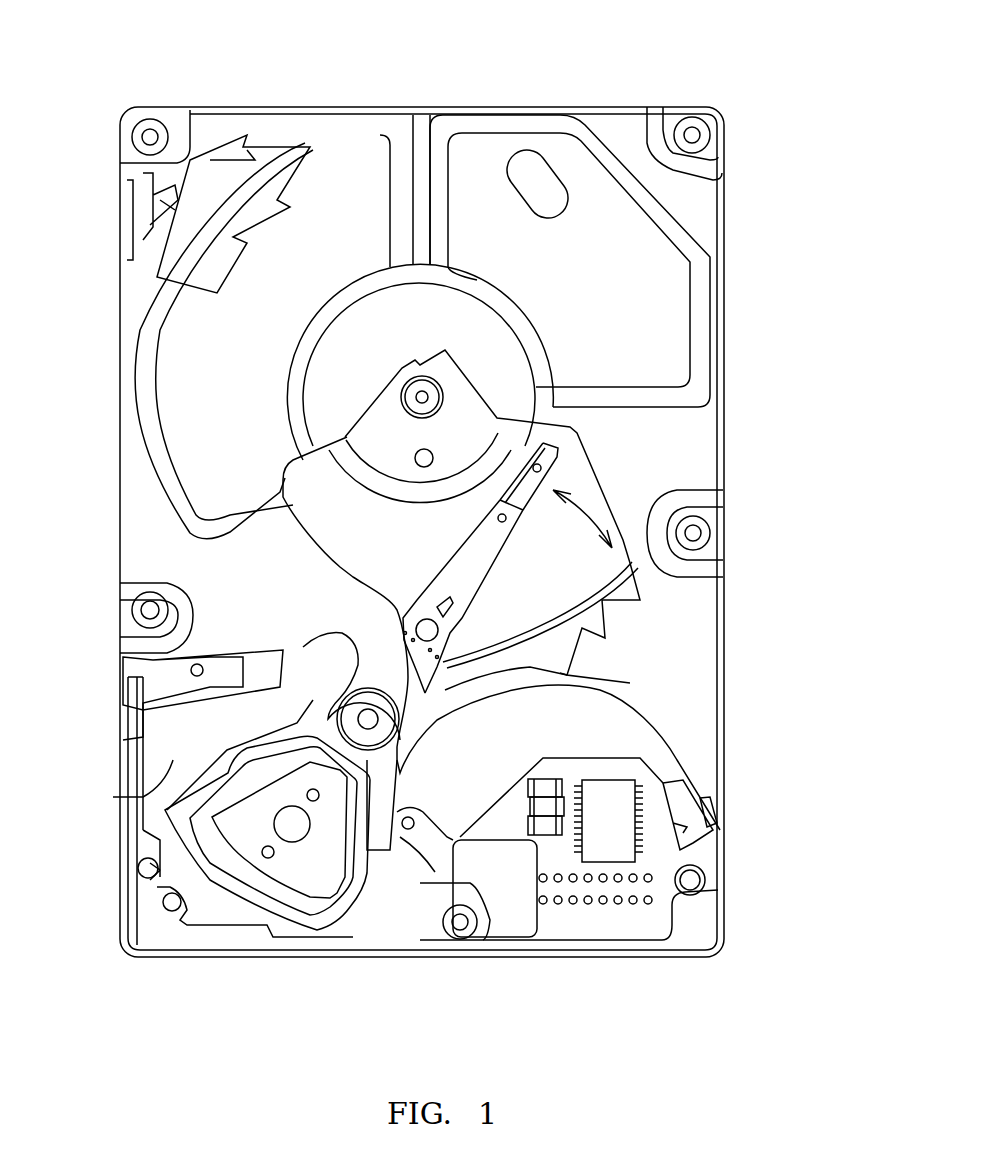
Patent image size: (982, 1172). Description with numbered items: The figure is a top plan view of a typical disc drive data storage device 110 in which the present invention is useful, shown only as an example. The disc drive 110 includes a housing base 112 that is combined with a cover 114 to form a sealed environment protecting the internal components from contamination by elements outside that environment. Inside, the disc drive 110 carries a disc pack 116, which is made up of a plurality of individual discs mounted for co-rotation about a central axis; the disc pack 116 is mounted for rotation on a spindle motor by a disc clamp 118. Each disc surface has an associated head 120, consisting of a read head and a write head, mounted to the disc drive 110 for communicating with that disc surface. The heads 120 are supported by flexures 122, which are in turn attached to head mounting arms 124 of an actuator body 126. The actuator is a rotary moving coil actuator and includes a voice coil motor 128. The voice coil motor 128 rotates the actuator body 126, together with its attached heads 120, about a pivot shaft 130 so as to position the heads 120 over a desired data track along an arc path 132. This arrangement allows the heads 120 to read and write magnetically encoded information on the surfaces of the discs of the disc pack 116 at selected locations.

The disc drive data storage device 110 is at (100, 480).
The housing base 112 is at (726, 880).
The cover 114 is at (425, 120).
The disc pack 116 is at (602, 600).
The disc clamp 118 is at (457, 417).
The head 120 is at (568, 441).
The flexure 122 is at (480, 557).
The head mounting arm 124 is at (648, 693).
The actuator body 126 is at (333, 670).
The voice coil motor 128 is at (113, 797).
The pivot shaft 130 is at (368, 719).
The arc path 132 is at (600, 490).